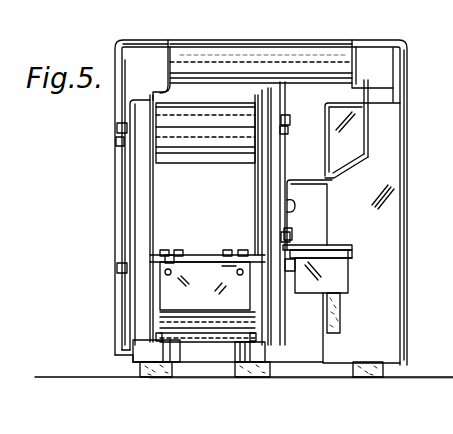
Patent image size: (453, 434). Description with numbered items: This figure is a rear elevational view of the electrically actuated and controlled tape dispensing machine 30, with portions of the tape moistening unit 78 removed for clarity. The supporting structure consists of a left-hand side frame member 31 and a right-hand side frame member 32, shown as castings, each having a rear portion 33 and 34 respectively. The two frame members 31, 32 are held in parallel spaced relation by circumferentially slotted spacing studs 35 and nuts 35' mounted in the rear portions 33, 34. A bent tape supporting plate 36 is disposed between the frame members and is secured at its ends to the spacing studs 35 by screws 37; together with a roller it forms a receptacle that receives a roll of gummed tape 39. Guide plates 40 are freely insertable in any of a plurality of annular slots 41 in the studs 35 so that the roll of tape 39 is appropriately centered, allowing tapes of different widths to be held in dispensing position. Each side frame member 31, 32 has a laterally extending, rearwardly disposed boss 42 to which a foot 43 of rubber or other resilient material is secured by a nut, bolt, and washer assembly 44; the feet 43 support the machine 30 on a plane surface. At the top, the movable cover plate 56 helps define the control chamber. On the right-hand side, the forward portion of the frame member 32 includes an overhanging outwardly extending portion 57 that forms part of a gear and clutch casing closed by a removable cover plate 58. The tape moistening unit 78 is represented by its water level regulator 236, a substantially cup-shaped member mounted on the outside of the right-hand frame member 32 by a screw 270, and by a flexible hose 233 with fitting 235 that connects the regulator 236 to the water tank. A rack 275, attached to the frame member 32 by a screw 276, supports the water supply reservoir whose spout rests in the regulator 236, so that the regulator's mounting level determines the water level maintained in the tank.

The tape dispensing machine 30 is at (100, 220).
The left-hand side frame member 31 is at (374, 40).
The right-hand side frame member 32 is at (118, 40).
The rear portion of left-hand side frame member 33 is at (122, 240).
The rear portion of right-hand side frame member 34 is at (268, 190).
The spacing stud 35 is at (188, 185).
The nut 35' is at (191, 227).
The tape supporting plate 36 is at (208, 278).
The screw 37 is at (160, 275).
The roll of gummed tape 39 is at (177, 162).
The guide plate 40 is at (150, 196).
The annular slot 41 is at (183, 258).
The boss 42 is at (148, 352).
The foot 43 is at (158, 378).
The nut, bolt, and washer assembly 44 is at (156, 338).
The movable cover plate 56 is at (270, 46).
The overhanging outwardly extending portion 57 is at (397, 88).
The removable cover plate 58 is at (383, 204).
The tape moistening unit 78 is at (352, 257).
The flexible hose 233 is at (342, 333).
The fitting 235 is at (340, 312).
The water level regulator 236 is at (340, 275).
The screw 270 is at (292, 233).
The rack 275 is at (364, 118).
The screw 276 is at (293, 206).